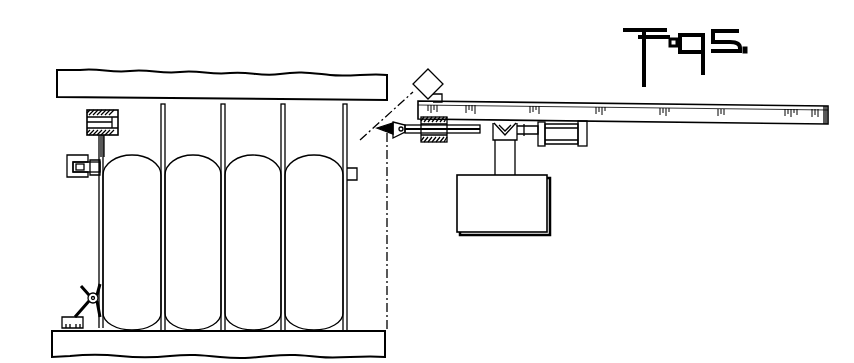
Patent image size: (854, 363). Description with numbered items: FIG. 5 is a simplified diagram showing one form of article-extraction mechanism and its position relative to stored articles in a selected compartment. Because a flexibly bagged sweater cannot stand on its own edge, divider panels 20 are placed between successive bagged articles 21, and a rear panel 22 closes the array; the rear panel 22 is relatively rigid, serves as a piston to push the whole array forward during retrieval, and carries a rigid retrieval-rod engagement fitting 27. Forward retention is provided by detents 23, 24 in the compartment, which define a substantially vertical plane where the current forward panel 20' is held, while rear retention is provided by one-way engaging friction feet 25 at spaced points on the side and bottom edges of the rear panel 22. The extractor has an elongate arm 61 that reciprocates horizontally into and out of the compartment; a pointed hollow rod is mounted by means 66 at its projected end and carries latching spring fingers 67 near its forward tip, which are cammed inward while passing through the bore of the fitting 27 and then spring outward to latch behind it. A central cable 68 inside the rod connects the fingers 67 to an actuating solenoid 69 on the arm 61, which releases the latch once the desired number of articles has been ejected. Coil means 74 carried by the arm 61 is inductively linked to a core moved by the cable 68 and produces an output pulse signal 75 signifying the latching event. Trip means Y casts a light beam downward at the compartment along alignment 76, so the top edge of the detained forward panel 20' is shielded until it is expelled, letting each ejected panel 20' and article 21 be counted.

The divider panels 20 is at (254, 184).
The forward panel 20' is at (385, 265).
The bagged articles 21 is at (310, 241).
The rear panel 22 is at (99, 222).
The detent 23 is at (350, 330).
The detent 24 is at (356, 180).
The one-way engaging friction feet 25 is at (68, 178).
The retrieval-rod engagement fitting 27 is at (93, 110).
The elongate arm 61 is at (617, 106).
The mounting means 66 is at (433, 142).
The latching detents or spring fingers 67 is at (396, 138).
The central cable 68 is at (522, 125).
The actuating solenoid 69 is at (556, 123).
The coil means 74 is at (516, 176).
The output pulse signal 75 is at (508, 235).
The alignment 76 is at (390, 120).
The trip means Y is at (436, 76).